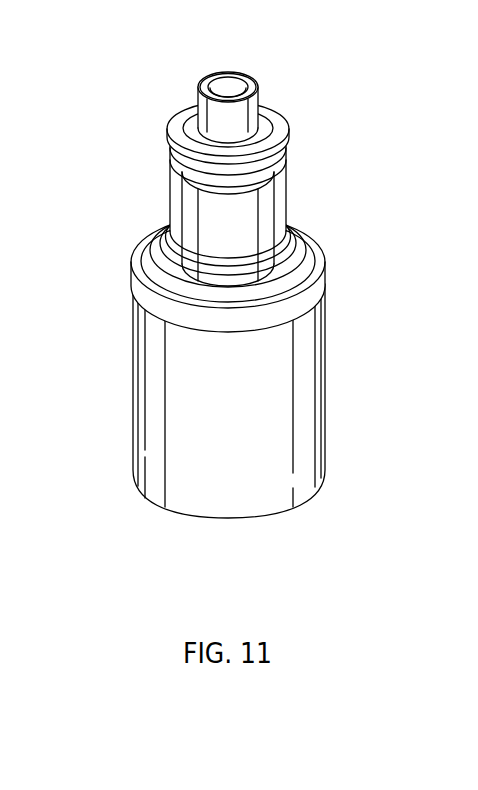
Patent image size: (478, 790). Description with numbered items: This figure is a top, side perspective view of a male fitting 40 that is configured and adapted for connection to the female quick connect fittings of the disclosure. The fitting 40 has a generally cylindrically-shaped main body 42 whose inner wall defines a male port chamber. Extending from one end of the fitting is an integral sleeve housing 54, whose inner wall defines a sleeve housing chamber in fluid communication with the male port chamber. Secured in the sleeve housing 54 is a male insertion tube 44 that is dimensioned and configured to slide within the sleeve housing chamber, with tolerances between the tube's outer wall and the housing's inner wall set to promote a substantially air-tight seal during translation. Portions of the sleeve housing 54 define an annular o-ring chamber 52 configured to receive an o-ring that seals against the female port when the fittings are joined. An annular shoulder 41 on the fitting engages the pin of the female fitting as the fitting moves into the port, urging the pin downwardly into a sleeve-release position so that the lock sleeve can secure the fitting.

The male fitting 40 is at (262, 295).
The annular shoulder 41 is at (302, 262).
The main body 42 is at (322, 392).
The male insertion tube 44 is at (252, 115).
The annular o-ring chamber 52 is at (259, 178).
The sleeve housing 54 is at (276, 142).